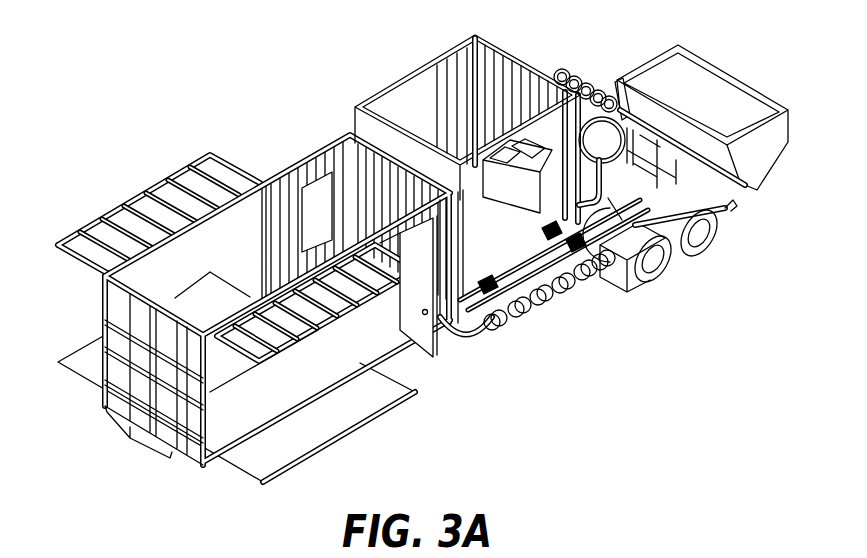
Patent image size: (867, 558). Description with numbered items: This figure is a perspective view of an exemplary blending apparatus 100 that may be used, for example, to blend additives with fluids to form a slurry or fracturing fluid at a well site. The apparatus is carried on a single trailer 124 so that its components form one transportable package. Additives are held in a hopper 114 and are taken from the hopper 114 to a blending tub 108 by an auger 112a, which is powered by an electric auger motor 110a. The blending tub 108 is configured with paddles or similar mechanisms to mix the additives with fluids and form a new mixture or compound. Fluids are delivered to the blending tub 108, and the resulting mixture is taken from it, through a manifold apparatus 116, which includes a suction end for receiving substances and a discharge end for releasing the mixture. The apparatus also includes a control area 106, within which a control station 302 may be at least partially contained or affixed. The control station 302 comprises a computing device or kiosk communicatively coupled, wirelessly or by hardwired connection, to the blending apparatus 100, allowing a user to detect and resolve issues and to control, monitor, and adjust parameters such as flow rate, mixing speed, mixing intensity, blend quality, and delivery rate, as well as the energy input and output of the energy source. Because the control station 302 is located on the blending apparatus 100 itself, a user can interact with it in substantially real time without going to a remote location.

The blending apparatus 100 is at (154, 113).
The control area 106 is at (414, 109).
The blending tub 108 is at (613, 262).
The electric auger motor 110a is at (565, 75).
The auger 112a is at (627, 117).
The hopper 114 is at (727, 82).
The manifold apparatus 116 is at (463, 328).
The trailer 124 is at (680, 260).
The control station 302 is at (553, 300).